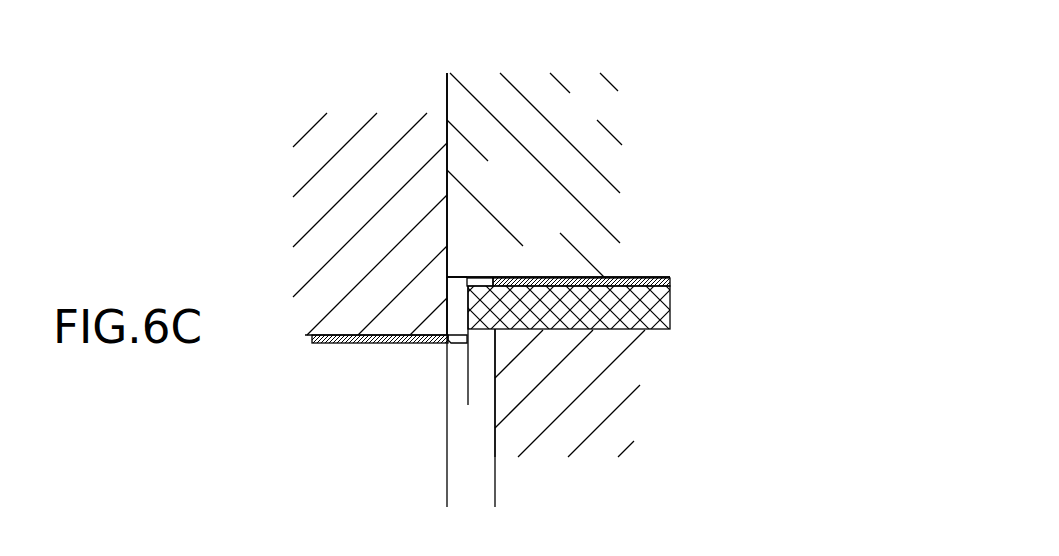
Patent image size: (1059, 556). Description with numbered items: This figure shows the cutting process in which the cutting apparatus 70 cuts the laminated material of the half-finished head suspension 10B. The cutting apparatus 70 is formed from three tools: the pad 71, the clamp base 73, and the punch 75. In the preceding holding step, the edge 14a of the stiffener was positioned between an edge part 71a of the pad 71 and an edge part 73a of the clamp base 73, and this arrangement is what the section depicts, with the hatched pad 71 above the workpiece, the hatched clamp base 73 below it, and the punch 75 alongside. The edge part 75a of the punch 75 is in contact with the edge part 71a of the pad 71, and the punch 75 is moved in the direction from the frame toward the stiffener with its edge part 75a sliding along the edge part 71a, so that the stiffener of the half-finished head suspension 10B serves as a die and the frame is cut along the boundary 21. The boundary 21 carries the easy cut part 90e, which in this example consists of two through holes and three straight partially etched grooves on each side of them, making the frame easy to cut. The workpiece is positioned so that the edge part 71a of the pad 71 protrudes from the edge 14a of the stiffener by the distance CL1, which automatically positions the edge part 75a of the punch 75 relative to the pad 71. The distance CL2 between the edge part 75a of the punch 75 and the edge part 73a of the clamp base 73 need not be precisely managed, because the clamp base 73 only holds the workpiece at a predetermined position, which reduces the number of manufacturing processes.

The cutting apparatus 70 is at (697, 185).
The pad 71 is at (602, 134).
The edge part of the pad 71a is at (447, 311).
The punch 75 is at (332, 143).
The edge part of the punch 75a is at (447, 112).
The boundary 21 is at (473, 264).
The easy cut part 90e is at (485, 278).
The half-finished head suspension 10B is at (681, 280).
The edge of the stiffener 14a is at (482, 315).
The clamp base 73 is at (597, 403).
The edge part of the clamp base 73a is at (495, 363).
The distance CL1 is at (512, 398).
The distance CL2 is at (557, 498).